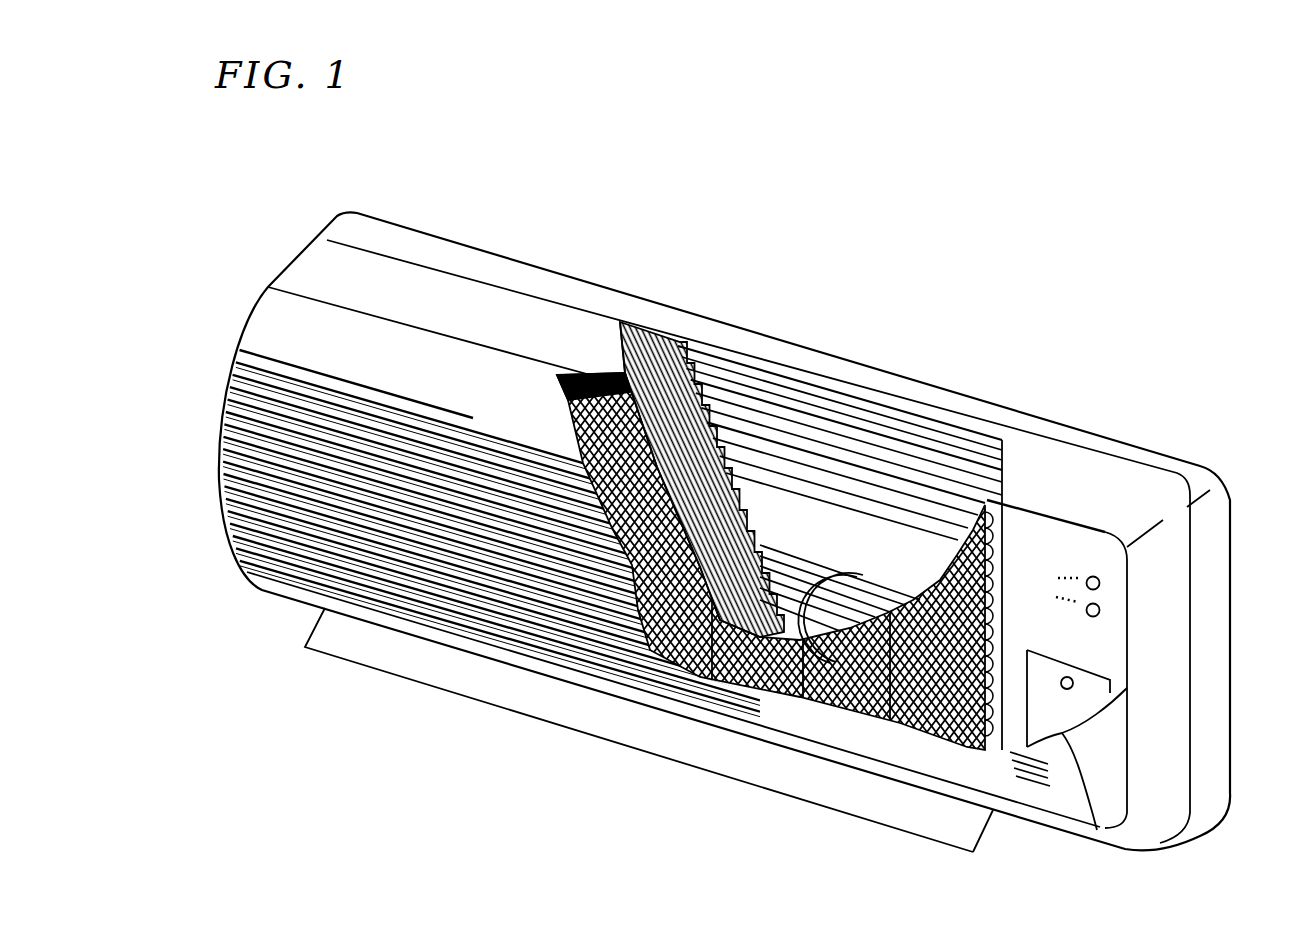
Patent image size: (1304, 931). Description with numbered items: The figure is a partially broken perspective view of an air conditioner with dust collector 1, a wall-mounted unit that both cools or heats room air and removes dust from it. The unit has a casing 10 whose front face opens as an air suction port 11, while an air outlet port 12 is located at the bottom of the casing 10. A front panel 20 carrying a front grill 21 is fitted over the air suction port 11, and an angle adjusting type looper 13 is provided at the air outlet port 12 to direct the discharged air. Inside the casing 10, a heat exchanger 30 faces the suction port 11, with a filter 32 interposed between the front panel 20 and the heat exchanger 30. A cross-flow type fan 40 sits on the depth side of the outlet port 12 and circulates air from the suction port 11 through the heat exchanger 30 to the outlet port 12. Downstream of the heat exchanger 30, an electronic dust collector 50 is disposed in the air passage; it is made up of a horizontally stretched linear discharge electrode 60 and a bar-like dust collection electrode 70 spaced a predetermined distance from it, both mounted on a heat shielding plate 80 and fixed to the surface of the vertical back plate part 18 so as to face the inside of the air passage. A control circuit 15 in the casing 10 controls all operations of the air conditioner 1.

The air conditioner with dust collector 1 is at (460, 156).
The casing 10 is at (832, 362).
The air suction port 11 is at (703, 625).
The air outlet port 12 is at (877, 772).
The angle adjusting type looper 13 is at (973, 828).
The control circuit 15 is at (1097, 680).
The vertical back plate part 18 is at (768, 390).
The front panel 20 is at (437, 618).
The front grill 21 is at (514, 600).
The heat exchanger 30 is at (612, 585).
The filter 32 is at (843, 660).
The cross-flow type fan 40 is at (805, 660).
The electronic dust collector 50 is at (907, 443).
The linear discharge electrode 60 is at (935, 493).
The dust collection electrode 70 is at (980, 507).
The heat shielding plate 80 is at (843, 428).